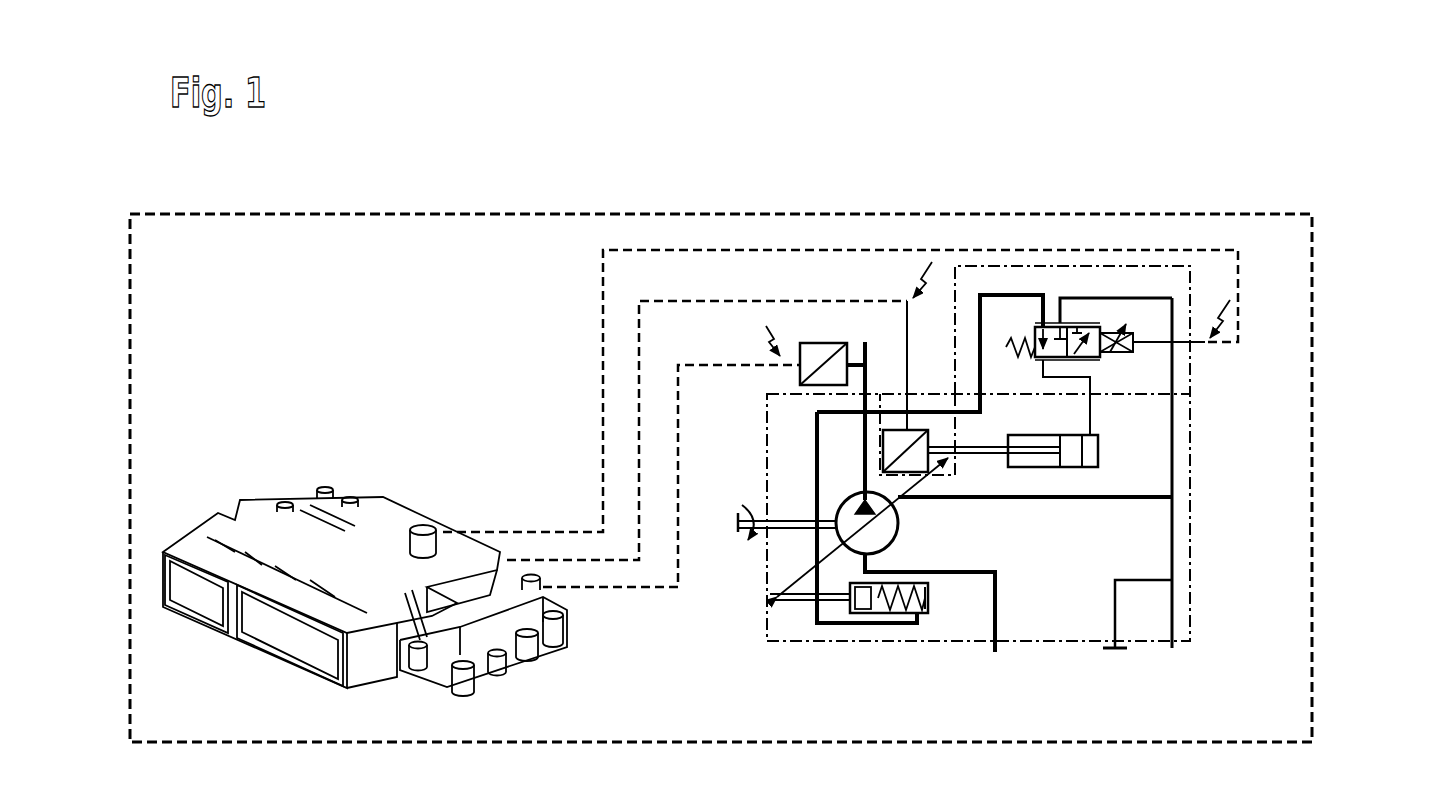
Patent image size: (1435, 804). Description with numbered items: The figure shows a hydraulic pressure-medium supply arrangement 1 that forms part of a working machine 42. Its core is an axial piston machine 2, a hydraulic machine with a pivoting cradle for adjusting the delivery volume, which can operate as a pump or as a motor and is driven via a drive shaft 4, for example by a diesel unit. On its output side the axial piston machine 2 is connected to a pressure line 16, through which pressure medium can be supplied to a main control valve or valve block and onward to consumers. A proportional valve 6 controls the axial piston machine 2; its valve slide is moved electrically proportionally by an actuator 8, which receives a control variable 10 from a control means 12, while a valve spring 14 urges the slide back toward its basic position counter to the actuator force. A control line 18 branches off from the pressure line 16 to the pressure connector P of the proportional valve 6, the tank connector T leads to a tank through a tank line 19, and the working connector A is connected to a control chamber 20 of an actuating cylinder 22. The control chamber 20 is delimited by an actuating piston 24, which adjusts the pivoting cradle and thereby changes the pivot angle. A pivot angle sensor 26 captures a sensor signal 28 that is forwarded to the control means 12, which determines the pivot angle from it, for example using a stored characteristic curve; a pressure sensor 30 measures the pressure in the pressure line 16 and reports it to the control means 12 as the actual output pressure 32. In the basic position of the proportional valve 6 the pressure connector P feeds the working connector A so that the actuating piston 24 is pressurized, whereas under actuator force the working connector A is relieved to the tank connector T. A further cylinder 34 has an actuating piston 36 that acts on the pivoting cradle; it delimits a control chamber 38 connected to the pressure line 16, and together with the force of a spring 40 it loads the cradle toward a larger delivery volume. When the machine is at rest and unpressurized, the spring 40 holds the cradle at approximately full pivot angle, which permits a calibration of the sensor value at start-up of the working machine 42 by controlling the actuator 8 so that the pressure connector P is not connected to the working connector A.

The hydraulic pressure-medium supply arrangement 1 is at (1131, 196).
The axial piston machine 2 is at (847, 500).
The drive shaft 4 is at (735, 528).
The proportional valve 6 is at (1079, 323).
The actuator 8 is at (1133, 345).
The control variable 10 is at (660, 250).
The control means 12 is at (297, 652).
The valve spring 14 is at (1008, 348).
The pressure line 16 is at (865, 346).
The control line 18 is at (930, 428).
The tank line 19 is at (1176, 478).
The control chamber 20 is at (1093, 444).
The actuating cylinder 22 is at (1104, 455).
The actuating piston 24 is at (1072, 458).
The pivot angle sensor 26 is at (893, 430).
The sensor signal 28 is at (712, 301).
The pressure sensor 30 is at (825, 343).
The actual output pressure 32 is at (640, 590).
The cylinder 34 is at (866, 642).
The actuating piston 36 is at (851, 612).
The control chamber 38 is at (900, 614).
The spring 40 is at (927, 598).
The working machine 42 is at (1323, 376).